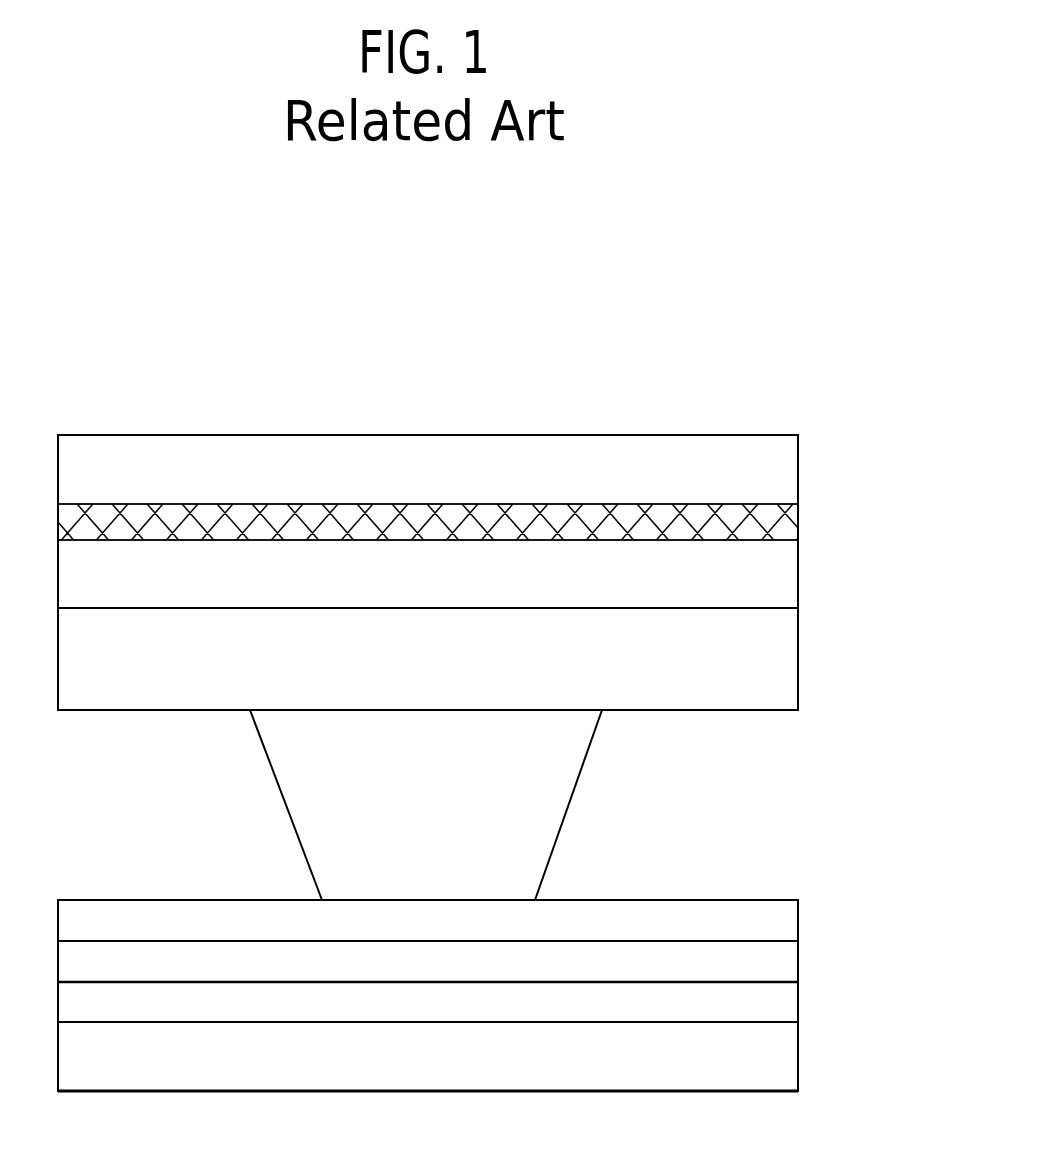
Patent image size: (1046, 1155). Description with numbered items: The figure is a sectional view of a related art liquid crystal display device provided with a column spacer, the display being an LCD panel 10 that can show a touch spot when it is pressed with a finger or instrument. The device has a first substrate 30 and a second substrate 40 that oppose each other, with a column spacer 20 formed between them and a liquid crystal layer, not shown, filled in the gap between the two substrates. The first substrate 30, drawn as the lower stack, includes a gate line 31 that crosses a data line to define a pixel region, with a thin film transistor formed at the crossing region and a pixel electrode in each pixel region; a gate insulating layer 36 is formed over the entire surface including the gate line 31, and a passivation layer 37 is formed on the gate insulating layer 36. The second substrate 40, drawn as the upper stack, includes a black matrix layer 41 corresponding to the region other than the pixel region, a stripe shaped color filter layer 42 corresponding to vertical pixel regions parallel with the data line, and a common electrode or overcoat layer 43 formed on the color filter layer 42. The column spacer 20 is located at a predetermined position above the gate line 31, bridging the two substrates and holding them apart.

The LCD panel 10 is at (770, 356).
The column spacer 20 is at (553, 809).
The first substrate 30 is at (781, 1062).
The gate line 31 is at (781, 1011).
The gate insulating layer 36 is at (781, 966).
The passivation layer 37 is at (781, 926).
The second substrate 40 is at (779, 477).
The black matrix layer 41 is at (778, 532).
The color filter layer 42 is at (779, 589).
The common electrode or overcoat layer 43 is at (779, 671).